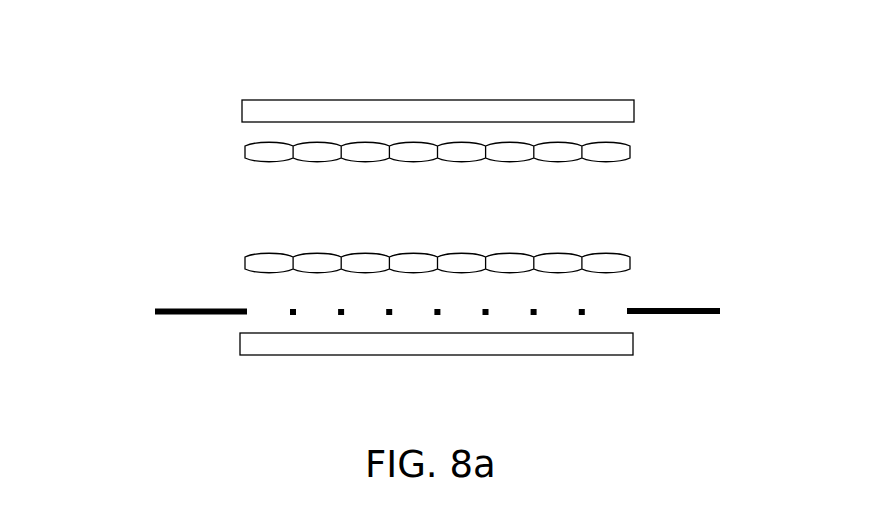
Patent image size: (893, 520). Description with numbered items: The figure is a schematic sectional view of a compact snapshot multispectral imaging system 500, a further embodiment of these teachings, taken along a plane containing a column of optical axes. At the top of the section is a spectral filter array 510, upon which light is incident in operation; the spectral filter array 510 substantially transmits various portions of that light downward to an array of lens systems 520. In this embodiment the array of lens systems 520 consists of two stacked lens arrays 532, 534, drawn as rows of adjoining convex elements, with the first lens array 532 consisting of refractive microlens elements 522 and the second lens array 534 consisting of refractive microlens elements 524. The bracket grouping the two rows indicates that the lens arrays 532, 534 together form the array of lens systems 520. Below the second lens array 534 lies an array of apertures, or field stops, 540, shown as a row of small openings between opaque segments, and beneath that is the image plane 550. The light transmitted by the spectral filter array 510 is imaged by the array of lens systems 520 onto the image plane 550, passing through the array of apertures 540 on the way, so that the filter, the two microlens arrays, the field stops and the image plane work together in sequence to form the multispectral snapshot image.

The compact snapshot multispectral imaging system 500 is at (168, 87).
The spectral filter array 510 is at (438, 100).
The array of lens systems 520 is at (165, 142).
The refractive microlens elements 522 is at (441, 165).
The refractive microlens elements 524 is at (441, 252).
The lens array 532 is at (643, 133).
The lens array 534 is at (643, 245).
The array of apertures 540 is at (732, 292).
The image plane 550 is at (438, 355).